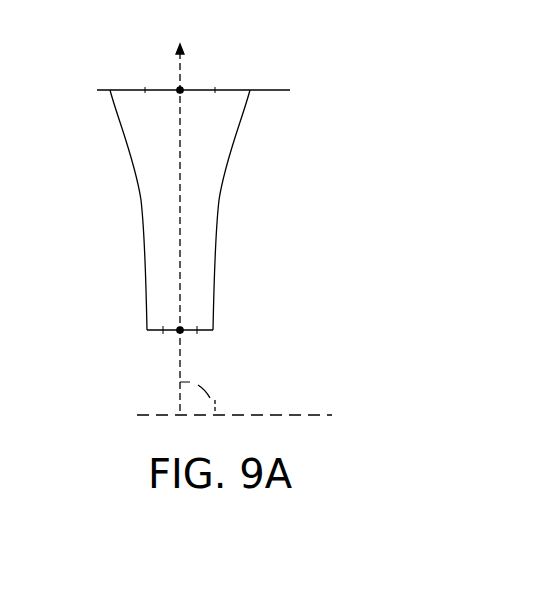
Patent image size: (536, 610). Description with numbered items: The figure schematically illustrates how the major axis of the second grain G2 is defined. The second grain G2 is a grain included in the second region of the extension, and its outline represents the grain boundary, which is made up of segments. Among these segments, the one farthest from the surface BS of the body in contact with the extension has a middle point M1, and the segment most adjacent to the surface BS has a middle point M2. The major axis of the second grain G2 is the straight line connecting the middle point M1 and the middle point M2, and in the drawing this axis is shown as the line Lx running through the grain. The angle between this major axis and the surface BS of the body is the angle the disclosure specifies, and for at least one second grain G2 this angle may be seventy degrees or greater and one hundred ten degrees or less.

The second grain G2 is at (145, 253).
The optical axis Lx is at (182, 216).
The middle point M1 is at (198, 74).
The middle point M2 is at (198, 345).
The surface of the body BS is at (253, 417).